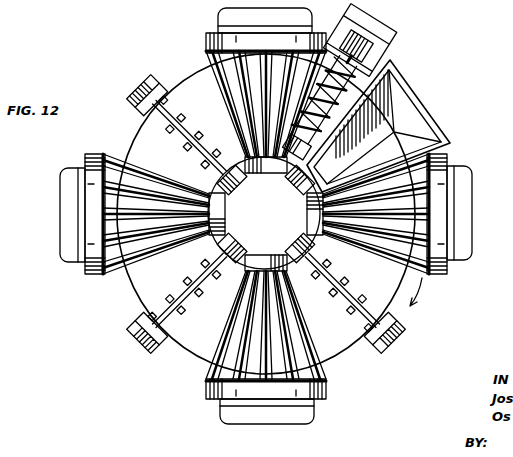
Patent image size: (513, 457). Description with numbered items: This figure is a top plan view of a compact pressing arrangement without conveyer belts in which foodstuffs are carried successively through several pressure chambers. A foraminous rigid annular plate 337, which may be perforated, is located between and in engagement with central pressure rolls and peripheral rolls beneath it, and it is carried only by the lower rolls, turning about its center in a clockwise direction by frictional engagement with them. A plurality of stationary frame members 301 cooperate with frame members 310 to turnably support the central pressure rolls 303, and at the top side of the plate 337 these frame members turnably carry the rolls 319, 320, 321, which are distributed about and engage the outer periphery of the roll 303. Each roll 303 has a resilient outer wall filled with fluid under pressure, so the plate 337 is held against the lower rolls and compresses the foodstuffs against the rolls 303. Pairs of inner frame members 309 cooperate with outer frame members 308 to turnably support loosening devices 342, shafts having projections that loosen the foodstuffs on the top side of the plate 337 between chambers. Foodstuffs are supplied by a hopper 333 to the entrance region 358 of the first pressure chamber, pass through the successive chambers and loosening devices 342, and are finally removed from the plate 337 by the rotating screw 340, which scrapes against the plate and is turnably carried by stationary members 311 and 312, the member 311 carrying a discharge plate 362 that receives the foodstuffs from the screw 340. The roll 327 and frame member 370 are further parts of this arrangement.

The stationary frame member 301 is at (300, 214).
The central pressure roll 303 is at (376, 234).
The outer frame member 308 is at (396, 332).
The inner frame member 309 is at (296, 242).
The frame member 310 is at (478, 213).
The stationary member 311 is at (388, 38).
The stationary member 312 is at (298, 174).
The roll 319 is at (402, 218).
The roll 320 is at (376, 252).
The roll 321 is at (376, 176).
The belt 327 is at (315, 325).
The hopper 333 is at (393, 126).
The foraminous rigid annular plate 337 is at (186, 348).
The rotating screw 340 is at (358, 58).
The loosening device 342 is at (342, 313).
The entrance region 358 is at (385, 135).
The discharge plate 362 is at (376, 32).
The receptacle 370 is at (48, 215).